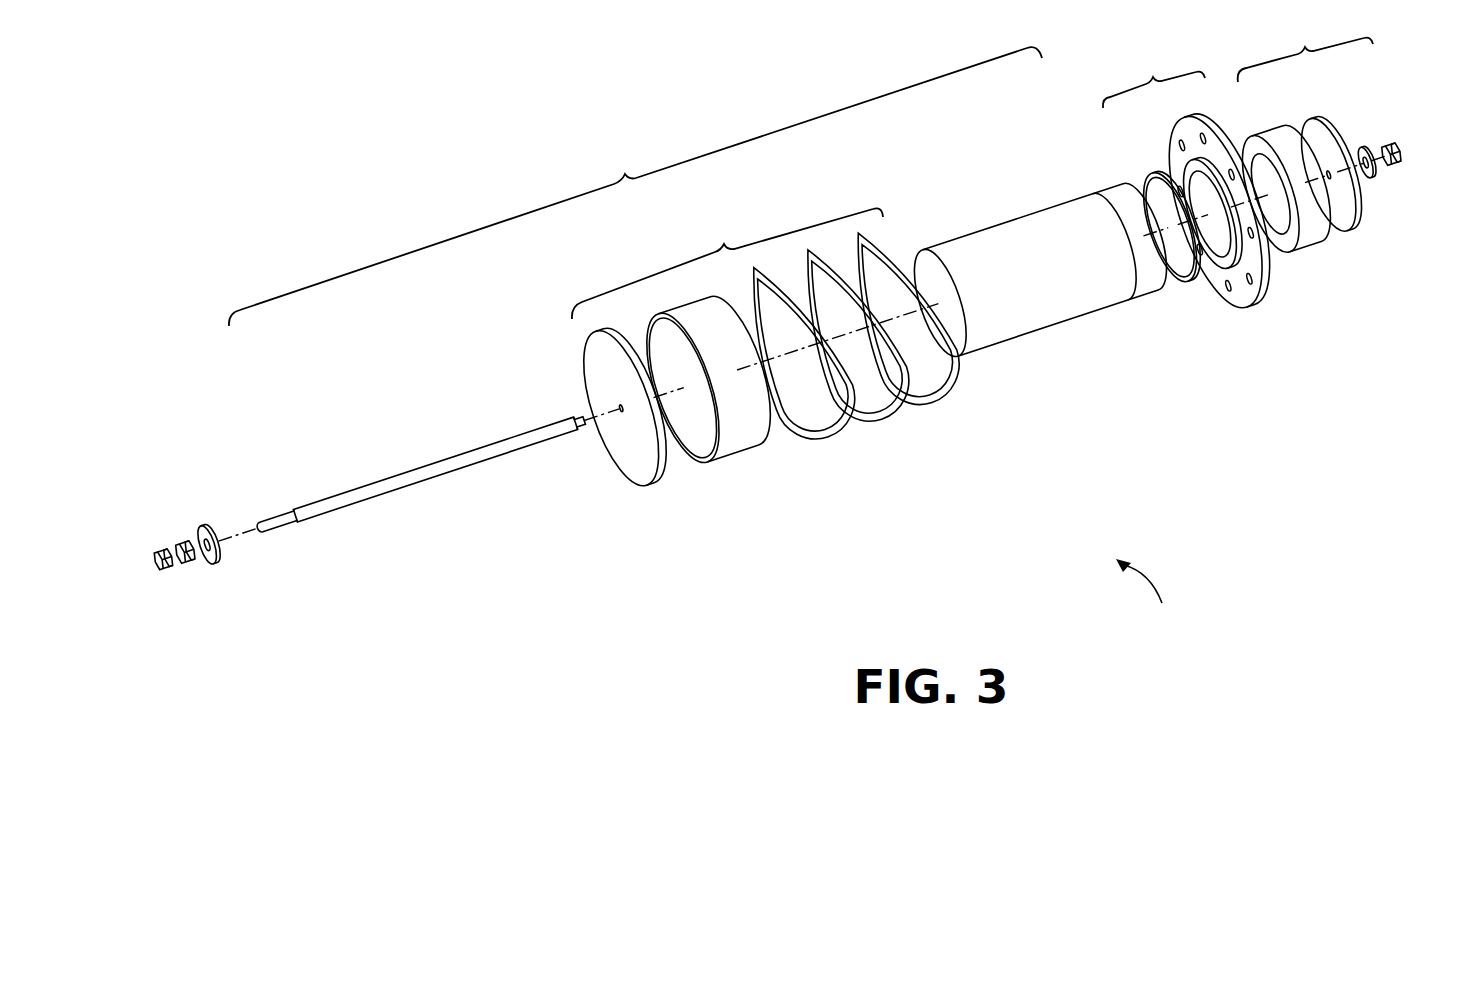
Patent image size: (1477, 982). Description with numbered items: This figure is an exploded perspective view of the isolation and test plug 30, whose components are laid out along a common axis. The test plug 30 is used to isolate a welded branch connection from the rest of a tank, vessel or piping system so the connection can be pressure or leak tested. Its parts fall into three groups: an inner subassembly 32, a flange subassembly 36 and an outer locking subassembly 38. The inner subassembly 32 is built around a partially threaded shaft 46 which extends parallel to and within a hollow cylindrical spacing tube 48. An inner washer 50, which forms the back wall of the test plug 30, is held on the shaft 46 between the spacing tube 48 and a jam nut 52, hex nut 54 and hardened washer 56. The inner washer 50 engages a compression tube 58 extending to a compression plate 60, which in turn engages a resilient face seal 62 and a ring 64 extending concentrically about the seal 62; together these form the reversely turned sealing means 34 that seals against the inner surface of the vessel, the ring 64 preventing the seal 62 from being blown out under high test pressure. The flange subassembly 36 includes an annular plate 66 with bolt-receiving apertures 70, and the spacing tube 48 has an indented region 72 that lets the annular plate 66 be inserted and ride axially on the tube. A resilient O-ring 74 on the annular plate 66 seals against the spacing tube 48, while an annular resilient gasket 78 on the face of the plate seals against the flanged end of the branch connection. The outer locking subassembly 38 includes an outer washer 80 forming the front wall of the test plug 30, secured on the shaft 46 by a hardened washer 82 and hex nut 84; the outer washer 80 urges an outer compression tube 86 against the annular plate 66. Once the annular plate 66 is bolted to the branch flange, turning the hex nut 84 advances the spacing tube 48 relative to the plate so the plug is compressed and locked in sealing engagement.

The test plug 30 is at (1149, 599).
The inner subassembly 32 is at (769, 342).
The reversely turned sealing means 34 is at (775, 360).
The flange subassembly 36 is at (1215, 216).
The outer locking subassembly 38 is at (1347, 167).
The partially threaded shaft 46 is at (430, 480).
The spacing tube 48 is at (1077, 320).
The inner washer 50 is at (648, 488).
The jam nut 52 is at (163, 567).
The hex nut 54 is at (187, 562).
The hardened washer 56 is at (210, 557).
The compression tube 58 is at (745, 458).
The compression plate 60 is at (810, 440).
The resilient face seal 62 is at (921, 405).
The ring 64 is at (873, 427).
The annular plate 66 is at (1262, 305).
The bolt-receiving apertures 70 is at (1178, 127).
The indented region 72 is at (1133, 300).
The resilient O-ring 74 is at (1187, 280).
The annular resilient gasket 78 is at (1228, 302).
The outer washer 80 is at (1345, 230).
The hardened washer 82 is at (1370, 175).
The hex nut 84 is at (1398, 163).
The outer compression tube 86 is at (1300, 250).